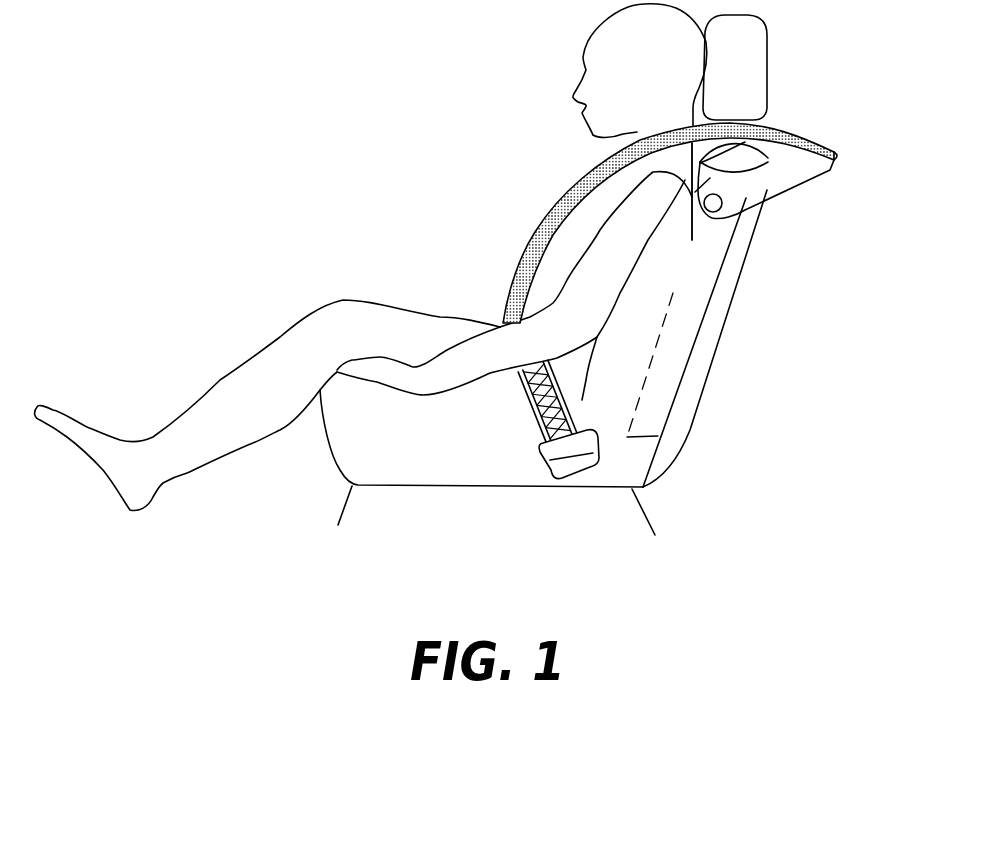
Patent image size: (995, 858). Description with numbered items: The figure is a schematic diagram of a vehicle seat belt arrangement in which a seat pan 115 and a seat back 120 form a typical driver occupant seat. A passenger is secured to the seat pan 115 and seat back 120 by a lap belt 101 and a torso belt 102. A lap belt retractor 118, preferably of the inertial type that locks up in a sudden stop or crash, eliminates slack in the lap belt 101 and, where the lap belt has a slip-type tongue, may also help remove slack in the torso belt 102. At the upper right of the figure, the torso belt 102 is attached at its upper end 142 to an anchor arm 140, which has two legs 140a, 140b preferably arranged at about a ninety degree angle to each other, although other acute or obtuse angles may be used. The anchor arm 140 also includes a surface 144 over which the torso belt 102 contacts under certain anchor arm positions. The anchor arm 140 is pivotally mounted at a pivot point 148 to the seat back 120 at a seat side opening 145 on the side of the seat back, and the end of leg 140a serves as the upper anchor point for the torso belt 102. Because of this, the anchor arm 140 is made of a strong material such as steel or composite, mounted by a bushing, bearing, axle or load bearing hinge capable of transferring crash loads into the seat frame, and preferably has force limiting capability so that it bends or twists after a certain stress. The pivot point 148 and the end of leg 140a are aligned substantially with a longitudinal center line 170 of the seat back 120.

The lap belt 101 is at (537, 403).
The torso belt 102 is at (550, 208).
The seat pan 115 is at (357, 457).
The lap belt retractor 118 is at (573, 450).
The seat back 120 is at (672, 370).
The anchor arm 140 is at (823, 167).
The leg 140a is at (792, 175).
The leg 140b is at (703, 223).
The upper end 142 is at (834, 154).
The surface 144 is at (800, 147).
The seat side opening 145 is at (722, 206).
The pivot point 148 is at (737, 213).
The longitudinal center line 170 is at (672, 440).